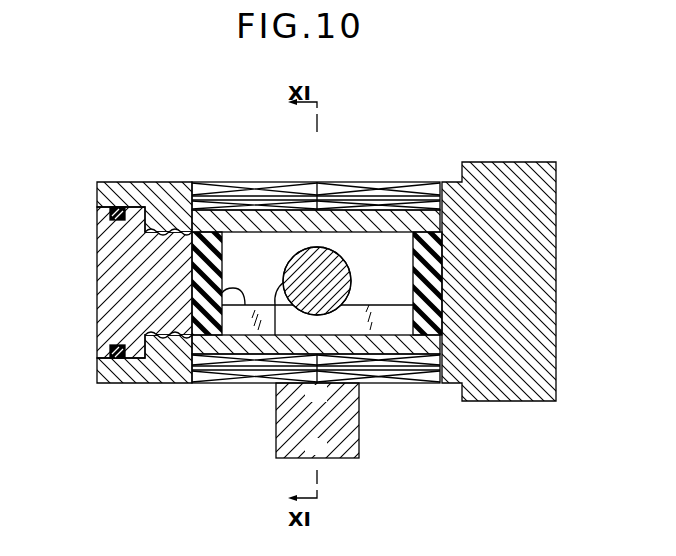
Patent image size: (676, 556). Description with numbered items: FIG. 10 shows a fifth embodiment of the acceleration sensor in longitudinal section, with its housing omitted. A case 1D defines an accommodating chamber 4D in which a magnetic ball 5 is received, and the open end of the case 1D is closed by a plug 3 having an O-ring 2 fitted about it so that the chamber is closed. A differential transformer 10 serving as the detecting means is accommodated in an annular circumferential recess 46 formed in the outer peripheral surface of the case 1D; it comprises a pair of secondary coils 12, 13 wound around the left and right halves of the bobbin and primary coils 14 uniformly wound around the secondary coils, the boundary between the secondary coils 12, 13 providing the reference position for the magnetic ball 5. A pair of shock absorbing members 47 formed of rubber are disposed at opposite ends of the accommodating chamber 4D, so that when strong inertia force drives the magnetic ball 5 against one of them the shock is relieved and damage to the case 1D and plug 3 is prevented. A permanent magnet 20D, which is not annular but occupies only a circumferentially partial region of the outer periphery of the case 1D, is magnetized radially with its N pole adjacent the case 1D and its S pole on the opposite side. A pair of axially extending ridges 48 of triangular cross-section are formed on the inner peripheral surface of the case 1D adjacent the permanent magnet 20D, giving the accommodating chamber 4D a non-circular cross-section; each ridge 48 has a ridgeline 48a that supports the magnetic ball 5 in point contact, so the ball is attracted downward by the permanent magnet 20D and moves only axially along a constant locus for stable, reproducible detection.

The case 1D is at (545, 313).
The O-ring 2 is at (117, 383).
The plug 3 is at (96, 320).
The accommodating chamber 4D is at (378, 285).
The magnetic ball 5 is at (276, 336).
The differential transformer 10 is at (351, 182).
The secondary coil 12 is at (252, 200).
The secondary coil 13 is at (378, 200).
The primary coil 14 is at (328, 189).
The permanent magnet 20D is at (288, 458).
The annular circumferential recess 46 is at (201, 183).
The shock absorbing member 47 is at (206, 231).
The ridge 48 is at (234, 313).
The ridgeline 48a is at (222, 301).